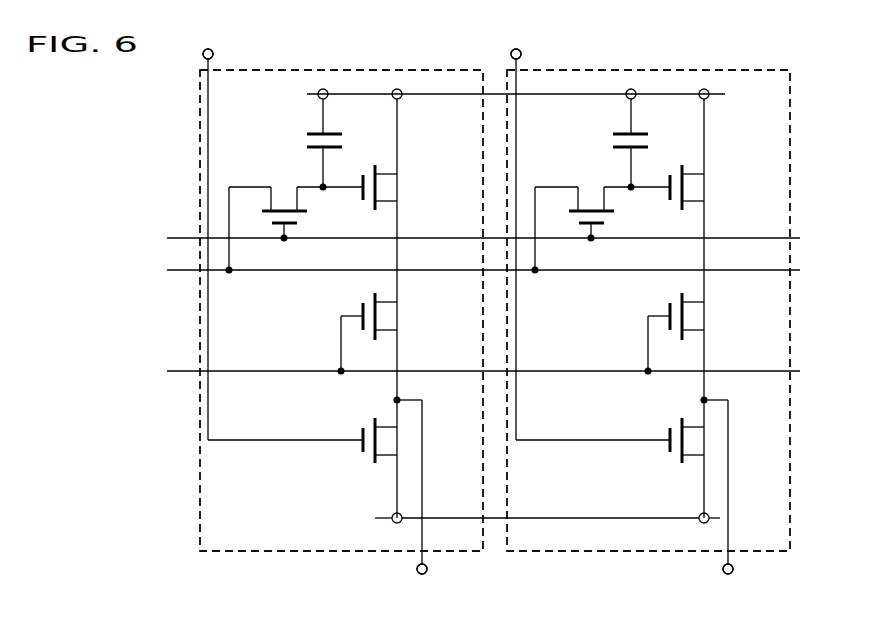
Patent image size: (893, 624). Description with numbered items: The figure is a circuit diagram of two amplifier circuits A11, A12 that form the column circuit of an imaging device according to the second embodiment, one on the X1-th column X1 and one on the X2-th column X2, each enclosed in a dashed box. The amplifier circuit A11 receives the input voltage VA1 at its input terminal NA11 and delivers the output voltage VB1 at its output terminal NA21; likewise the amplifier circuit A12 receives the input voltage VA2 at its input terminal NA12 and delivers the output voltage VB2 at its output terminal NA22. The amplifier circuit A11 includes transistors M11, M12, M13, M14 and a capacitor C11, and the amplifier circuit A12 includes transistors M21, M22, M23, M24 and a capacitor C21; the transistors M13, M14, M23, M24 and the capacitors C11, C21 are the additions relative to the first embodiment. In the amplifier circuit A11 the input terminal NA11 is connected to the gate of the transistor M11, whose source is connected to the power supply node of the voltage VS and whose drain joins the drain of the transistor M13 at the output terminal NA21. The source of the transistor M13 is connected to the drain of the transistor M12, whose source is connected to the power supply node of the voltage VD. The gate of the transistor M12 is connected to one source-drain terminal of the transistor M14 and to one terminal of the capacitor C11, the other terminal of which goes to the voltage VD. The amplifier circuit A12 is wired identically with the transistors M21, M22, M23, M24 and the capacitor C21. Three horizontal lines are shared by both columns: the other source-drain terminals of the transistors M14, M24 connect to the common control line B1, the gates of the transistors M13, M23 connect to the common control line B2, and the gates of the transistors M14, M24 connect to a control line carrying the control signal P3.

The amplifier circuit A11 is at (199, 132).
The amplifier circuit A12 is at (790, 121).
The X1-th column X1 is at (341, 297).
The X2-th column X2 is at (648, 297).
The input voltage VA1 is at (276, 232).
The input voltage VA2 is at (583, 232).
The input terminal NA11 is at (213, 54).
The input terminal NA12 is at (521, 54).
The output terminal NA21 is at (427, 569).
The output terminal NA22 is at (733, 569).
The output voltage VB1 is at (417, 502).
The output voltage VB2 is at (724, 502).
The capacitor C11 is at (316, 132).
The capacitor C21 is at (624, 132).
The transistor M11 is at (362, 452).
The transistor M12 is at (390, 187).
The transistor M13 is at (390, 315).
The transistor M14 is at (288, 194).
The transistor M21 is at (669, 452).
The transistor M22 is at (697, 187).
The transistor M23 is at (697, 315).
The transistor M24 is at (595, 194).
The voltage VD is at (532, 96).
The voltage VS is at (532, 520).
The control signal P3 is at (468, 238).
The common control line B1 is at (468, 270).
The common control line B2 is at (468, 371).